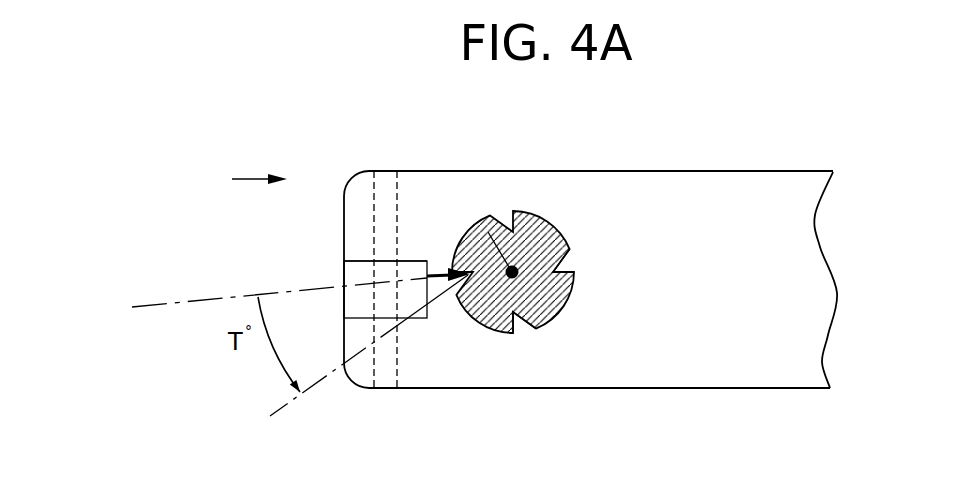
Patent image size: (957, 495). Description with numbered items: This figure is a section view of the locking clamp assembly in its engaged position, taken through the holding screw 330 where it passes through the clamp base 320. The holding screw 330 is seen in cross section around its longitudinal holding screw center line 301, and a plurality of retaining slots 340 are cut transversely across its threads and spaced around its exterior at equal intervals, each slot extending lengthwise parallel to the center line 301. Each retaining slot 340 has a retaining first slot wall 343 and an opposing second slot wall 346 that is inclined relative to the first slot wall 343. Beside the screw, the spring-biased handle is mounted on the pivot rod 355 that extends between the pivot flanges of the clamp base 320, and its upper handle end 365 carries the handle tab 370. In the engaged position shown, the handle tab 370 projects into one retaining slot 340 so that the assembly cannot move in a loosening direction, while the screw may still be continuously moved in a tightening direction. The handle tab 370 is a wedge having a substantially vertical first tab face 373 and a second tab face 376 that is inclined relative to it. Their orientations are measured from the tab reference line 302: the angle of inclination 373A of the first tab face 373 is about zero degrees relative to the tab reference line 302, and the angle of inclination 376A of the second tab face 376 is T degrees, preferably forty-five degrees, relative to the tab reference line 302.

The longitudinal holding screw center line 301 is at (488, 232).
The tab reference line 302 is at (132, 307).
The clamp base 320 is at (737, 370).
The holding screw 330 is at (548, 217).
The retaining slot 340 is at (524, 339).
The first slot wall 343 is at (571, 267).
The second slot wall 346 is at (571, 264).
The pivot rod 355 is at (387, 170).
The upper handle end 365 is at (364, 262).
The handle tab 370 is at (427, 287).
The first tab face 373 is at (448, 270).
The angle of inclination of the first tab face 373A is at (252, 292).
The second tab face 376 is at (443, 292).
The angle of inclination of the second tab face 376A is at (273, 351).